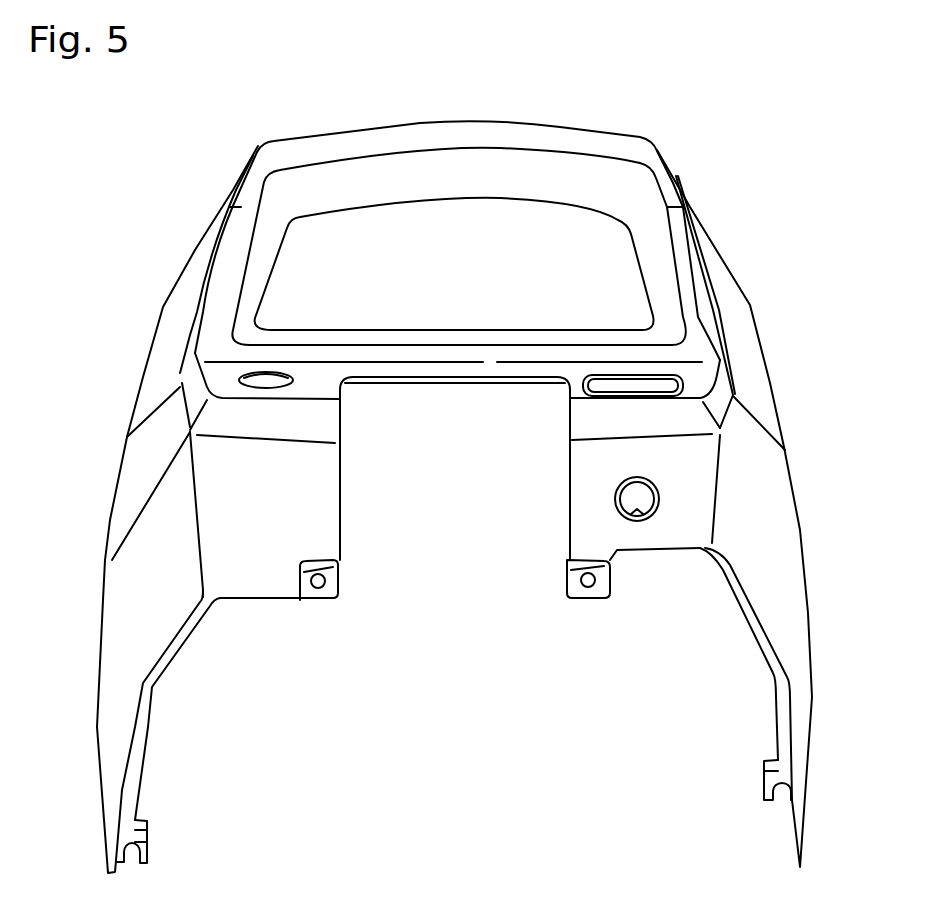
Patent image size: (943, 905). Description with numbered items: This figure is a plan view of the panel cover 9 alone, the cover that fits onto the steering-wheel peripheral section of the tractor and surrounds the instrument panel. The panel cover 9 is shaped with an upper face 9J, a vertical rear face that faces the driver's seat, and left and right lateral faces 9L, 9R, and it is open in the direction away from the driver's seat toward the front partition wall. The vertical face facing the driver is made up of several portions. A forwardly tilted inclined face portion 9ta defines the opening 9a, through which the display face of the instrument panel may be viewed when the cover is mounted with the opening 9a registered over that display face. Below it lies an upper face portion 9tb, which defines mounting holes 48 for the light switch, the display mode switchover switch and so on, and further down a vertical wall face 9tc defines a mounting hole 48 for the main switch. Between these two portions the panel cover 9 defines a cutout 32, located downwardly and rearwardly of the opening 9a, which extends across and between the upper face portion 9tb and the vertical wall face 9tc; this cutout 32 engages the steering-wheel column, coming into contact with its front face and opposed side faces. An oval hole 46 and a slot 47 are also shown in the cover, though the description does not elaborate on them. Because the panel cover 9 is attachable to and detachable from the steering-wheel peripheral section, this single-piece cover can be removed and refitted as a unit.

The panel cover 9 is at (722, 188).
The upper face 9J is at (566, 123).
The opening 9a is at (284, 247).
The forwardly tilted inclined face portion 9ta is at (247, 260).
The upper face portion 9tb is at (697, 370).
The vertical wall face 9tc is at (262, 560).
The left lateral face 9L is at (150, 457).
The right lateral face 9R is at (770, 465).
The cutout 32 is at (348, 522).
The oval hole 46 is at (280, 377).
The slot 47 is at (613, 383).
The mounting hole 48 is at (650, 518).